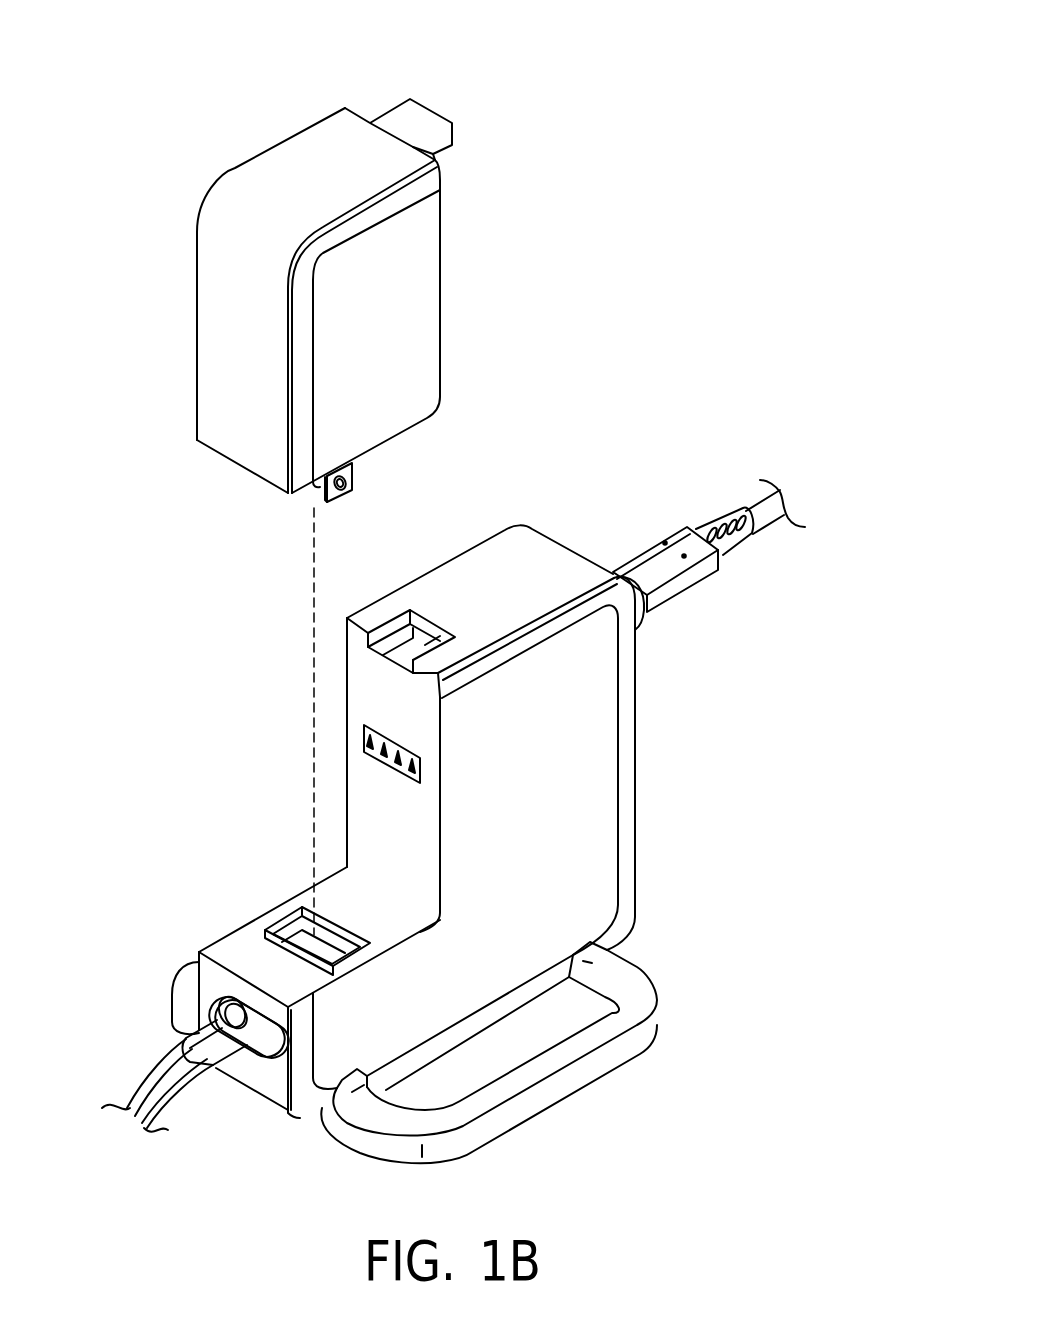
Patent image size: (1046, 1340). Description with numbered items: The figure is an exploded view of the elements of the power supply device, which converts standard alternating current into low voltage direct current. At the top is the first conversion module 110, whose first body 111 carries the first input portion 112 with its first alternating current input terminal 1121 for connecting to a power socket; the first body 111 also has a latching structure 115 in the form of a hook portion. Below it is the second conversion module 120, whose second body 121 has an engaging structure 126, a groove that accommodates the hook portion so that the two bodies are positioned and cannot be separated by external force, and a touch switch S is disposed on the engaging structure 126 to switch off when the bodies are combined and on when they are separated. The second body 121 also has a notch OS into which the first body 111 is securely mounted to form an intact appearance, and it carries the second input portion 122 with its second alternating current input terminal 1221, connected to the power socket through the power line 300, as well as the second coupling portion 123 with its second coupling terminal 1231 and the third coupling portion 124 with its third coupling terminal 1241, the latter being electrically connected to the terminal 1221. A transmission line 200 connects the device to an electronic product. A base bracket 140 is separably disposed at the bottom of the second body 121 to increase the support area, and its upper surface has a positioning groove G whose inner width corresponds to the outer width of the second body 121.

The first conversion module 110 is at (358, 95).
The first body 111 is at (285, 247).
The latching structure 115 is at (453, 140).
The first input portion 112 is at (363, 477).
The first alternating current input terminal 1121 is at (348, 493).
The second conversion module 120 is at (668, 905).
The second body 121 is at (578, 763).
The second input portion 122 is at (242, 1040).
The second alternating current input terminal 1221 is at (184, 992).
The second coupling portion 123 is at (376, 740).
The second coupling terminal 1231 is at (372, 757).
The third coupling portion 124 is at (298, 945).
The third coupling terminal 1241 is at (282, 924).
The engaging structure 126 is at (420, 647).
The base bracket 140 is at (558, 1083).
The transmission line 200 is at (757, 508).
The power line 300 is at (157, 1080).
The touch switch S is at (390, 650).
The notch OS is at (328, 1102).
The positioning groove G is at (292, 978).